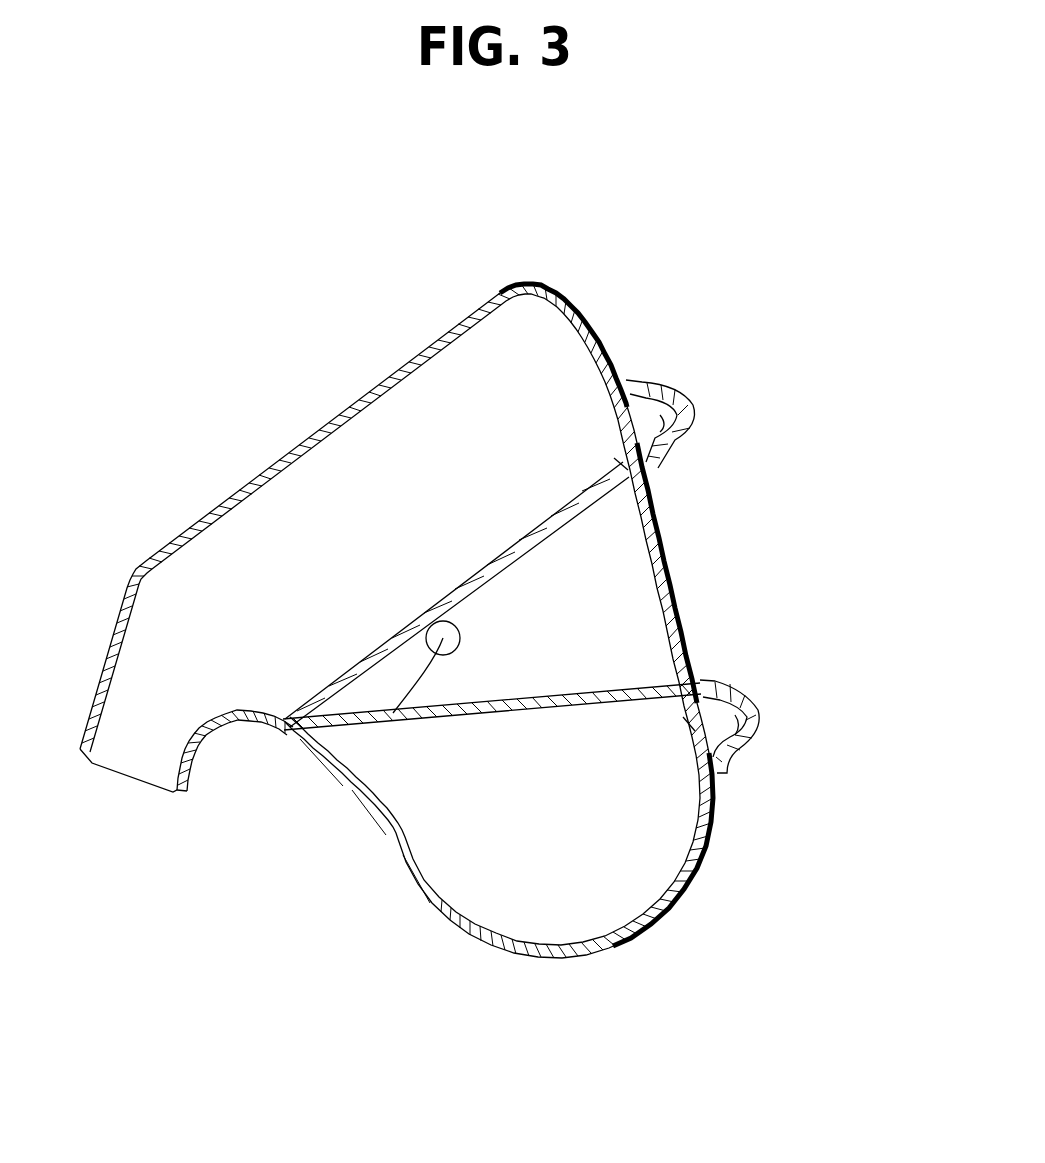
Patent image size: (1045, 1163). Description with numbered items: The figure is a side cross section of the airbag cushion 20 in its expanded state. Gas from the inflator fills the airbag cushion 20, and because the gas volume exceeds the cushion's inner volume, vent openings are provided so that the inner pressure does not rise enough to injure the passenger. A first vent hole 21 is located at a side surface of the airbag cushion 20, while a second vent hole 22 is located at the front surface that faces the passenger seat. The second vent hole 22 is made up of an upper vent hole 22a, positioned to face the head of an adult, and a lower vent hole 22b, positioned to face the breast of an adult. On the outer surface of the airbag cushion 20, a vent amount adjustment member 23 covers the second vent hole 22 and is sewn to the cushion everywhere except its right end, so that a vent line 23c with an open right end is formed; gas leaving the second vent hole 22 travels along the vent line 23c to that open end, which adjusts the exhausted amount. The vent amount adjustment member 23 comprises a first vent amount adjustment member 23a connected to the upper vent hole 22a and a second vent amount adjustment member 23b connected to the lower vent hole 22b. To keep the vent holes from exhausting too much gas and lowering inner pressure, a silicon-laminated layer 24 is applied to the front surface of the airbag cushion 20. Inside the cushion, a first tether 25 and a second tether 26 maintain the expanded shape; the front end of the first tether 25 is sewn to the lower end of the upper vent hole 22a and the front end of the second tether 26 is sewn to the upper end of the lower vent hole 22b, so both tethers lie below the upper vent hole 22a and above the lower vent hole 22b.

The airbag cushion 20 is at (324, 195).
The first vent hole 21 is at (370, 730).
The second vent hole 22 is at (527, 593).
The upper vent hole 22a is at (622, 465).
The lower vent hole 22b is at (687, 725).
The vent amount adjustment member 23 is at (863, 630).
The first vent amount adjustment member 23a is at (693, 403).
The second vent amount adjustment member 23b is at (743, 700).
The vent line 23c is at (658, 423).
The silicon-laminated layer 24 is at (577, 300).
The first tether 25 is at (367, 657).
The second tether 26 is at (490, 712).